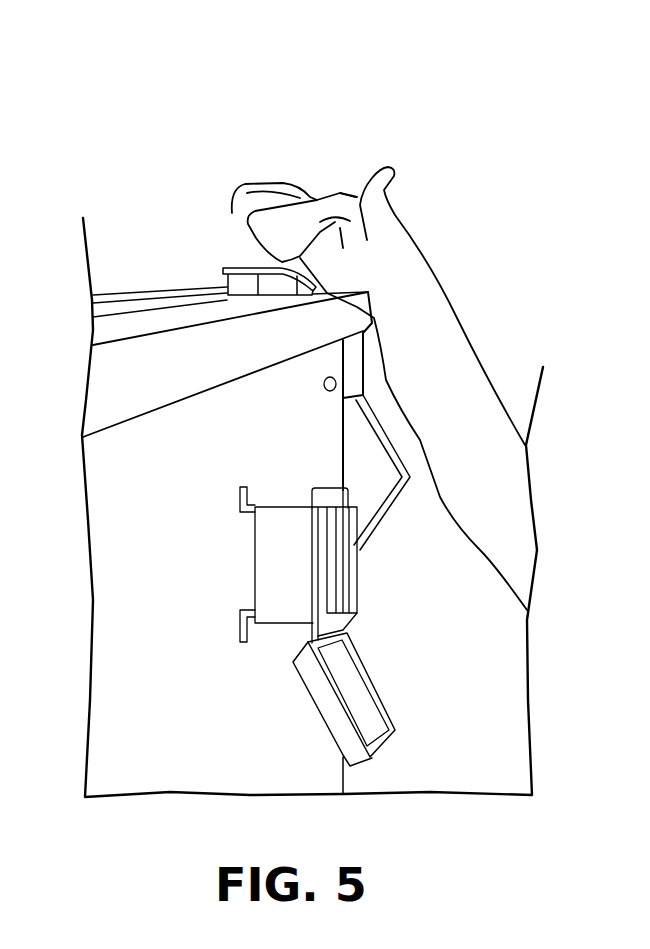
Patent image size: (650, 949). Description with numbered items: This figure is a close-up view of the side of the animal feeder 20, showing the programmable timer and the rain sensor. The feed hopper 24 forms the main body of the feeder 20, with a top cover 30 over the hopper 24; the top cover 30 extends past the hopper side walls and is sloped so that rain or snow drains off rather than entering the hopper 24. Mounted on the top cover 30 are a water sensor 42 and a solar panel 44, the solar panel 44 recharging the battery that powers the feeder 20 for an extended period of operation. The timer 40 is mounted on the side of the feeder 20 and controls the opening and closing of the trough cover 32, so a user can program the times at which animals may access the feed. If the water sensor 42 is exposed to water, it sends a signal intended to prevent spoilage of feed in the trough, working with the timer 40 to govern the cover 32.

The animal feeder 20 is at (118, 78).
The feed hopper 24 is at (127, 700).
The top cover 30 is at (128, 334).
The trough cover 32 is at (95, 387).
The timer 40 is at (335, 600).
The water sensor 42 is at (241, 267).
The solar panel 44 is at (182, 290).